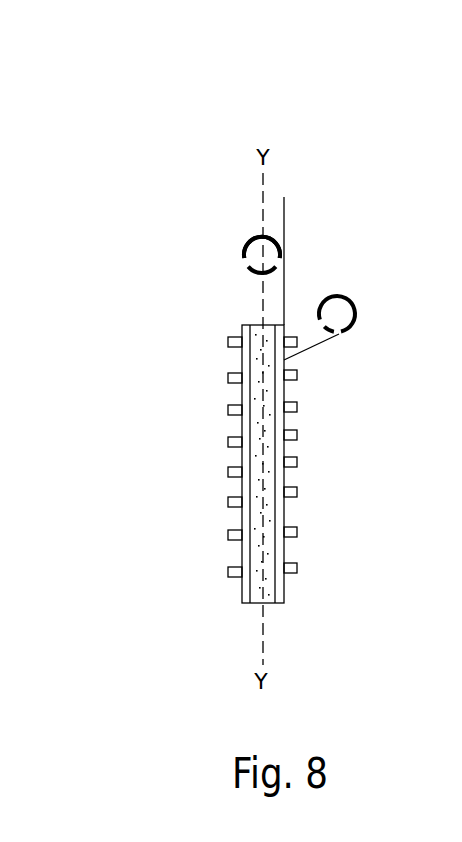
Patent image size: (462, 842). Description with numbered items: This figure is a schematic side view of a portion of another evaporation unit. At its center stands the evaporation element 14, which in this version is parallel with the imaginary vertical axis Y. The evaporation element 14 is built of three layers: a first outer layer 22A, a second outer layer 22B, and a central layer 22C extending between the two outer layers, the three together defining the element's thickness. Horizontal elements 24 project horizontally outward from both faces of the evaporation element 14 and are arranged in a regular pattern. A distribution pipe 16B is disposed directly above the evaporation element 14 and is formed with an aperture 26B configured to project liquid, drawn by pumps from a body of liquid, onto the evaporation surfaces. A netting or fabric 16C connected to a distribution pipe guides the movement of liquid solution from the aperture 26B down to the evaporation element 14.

The evaporation element 14 is at (287, 482).
The distribution pipe 16B is at (281, 241).
The netting or fabric 16C is at (320, 344).
The first outer layer 22A is at (241, 483).
The second outer layer 22B is at (284, 518).
The central layer 22C is at (257, 436).
The horizontal elements 24 is at (297, 405).
The aperture 26B is at (298, 320).